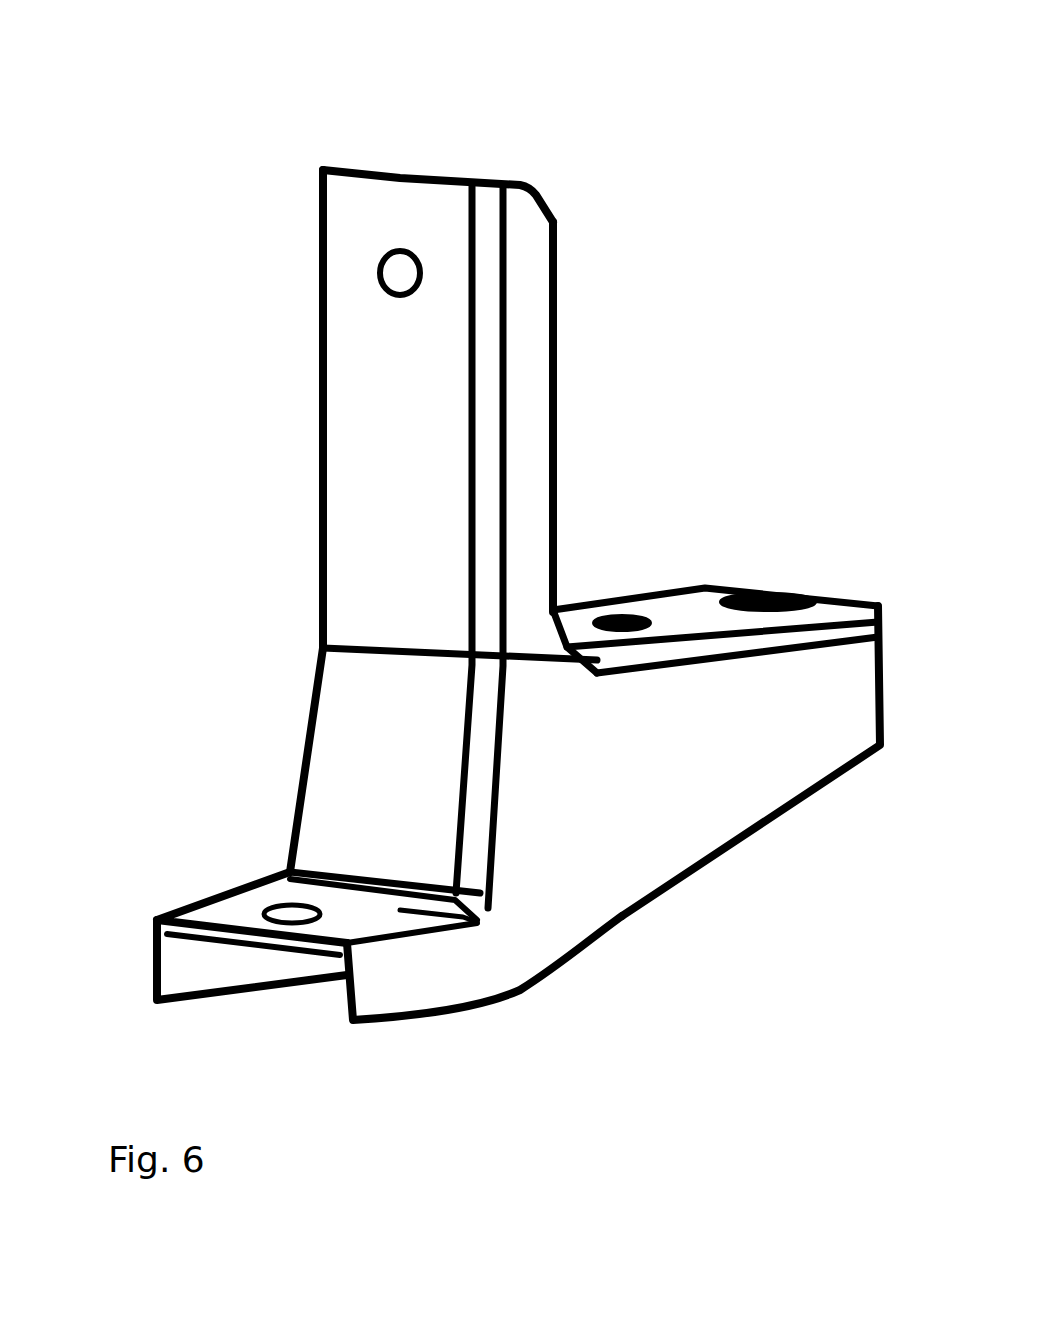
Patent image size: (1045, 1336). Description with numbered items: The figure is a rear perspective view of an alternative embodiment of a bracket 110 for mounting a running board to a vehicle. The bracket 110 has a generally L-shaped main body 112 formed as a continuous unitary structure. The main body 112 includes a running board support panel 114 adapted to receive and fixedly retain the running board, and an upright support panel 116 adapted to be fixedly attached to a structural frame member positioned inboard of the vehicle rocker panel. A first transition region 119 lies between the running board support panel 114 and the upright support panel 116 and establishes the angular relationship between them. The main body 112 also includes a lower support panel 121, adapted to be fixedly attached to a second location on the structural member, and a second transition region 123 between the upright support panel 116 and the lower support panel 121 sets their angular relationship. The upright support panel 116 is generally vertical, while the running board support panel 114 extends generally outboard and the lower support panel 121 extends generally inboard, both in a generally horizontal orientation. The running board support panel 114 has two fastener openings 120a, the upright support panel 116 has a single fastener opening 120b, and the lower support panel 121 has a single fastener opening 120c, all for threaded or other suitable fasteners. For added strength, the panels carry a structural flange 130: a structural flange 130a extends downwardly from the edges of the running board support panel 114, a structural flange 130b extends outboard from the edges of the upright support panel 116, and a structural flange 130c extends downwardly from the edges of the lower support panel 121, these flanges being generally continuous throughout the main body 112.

The bracket 110 is at (255, 188).
The main body 112 is at (320, 630).
The running board support panel 114 is at (680, 620).
The upright support panel 116 is at (452, 222).
The first transition region 119 is at (567, 628).
The fastener openings 120a is at (620, 620).
The fastener opening 120b is at (378, 262).
The fastener opening 120c is at (316, 903).
The lower support panel 121 is at (247, 907).
The second transition region 123 is at (483, 910).
The structural flange 130 is at (528, 414).
The structural flange 130a is at (650, 757).
The structural flange 130b is at (528, 298).
The structural flange 130c is at (224, 968).